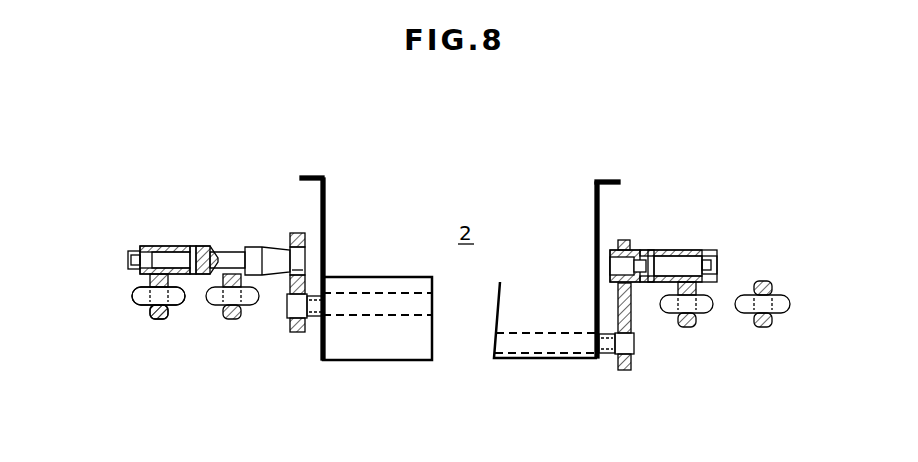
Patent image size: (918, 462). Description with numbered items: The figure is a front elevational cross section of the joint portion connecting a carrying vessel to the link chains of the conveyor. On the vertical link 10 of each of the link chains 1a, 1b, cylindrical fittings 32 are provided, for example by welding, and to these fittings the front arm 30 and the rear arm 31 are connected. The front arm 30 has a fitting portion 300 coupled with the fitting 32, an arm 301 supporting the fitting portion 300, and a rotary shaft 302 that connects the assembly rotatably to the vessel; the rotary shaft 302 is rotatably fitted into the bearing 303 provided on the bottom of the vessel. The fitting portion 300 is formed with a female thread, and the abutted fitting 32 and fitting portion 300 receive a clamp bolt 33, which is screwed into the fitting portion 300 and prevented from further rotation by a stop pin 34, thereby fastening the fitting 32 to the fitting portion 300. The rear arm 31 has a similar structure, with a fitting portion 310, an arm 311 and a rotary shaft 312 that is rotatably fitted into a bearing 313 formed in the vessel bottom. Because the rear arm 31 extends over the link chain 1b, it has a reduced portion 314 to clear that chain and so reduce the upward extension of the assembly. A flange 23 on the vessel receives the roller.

The flange 23 is at (310, 178).
The front arm 30 is at (670, 242).
The rear arm 31 is at (212, 243).
The cylindrical fitting 32 is at (158, 245).
The clamp bolt 33 is at (126, 248).
The stop pin 34 is at (193, 250).
The fitting portion 300 is at (648, 250).
The arm 301 is at (628, 345).
The rotary shaft 302 is at (634, 345).
The bearing 303 is at (562, 360).
The fitting portion 310 is at (190, 300).
The arm 311 is at (300, 334).
The rotary shaft 312 is at (290, 312).
The bearing 313 is at (384, 316).
The reduced portion 314 is at (248, 246).
The vertical link 10 is at (156, 318).
The link chain 1a is at (138, 292).
The link chain 1b is at (255, 300).